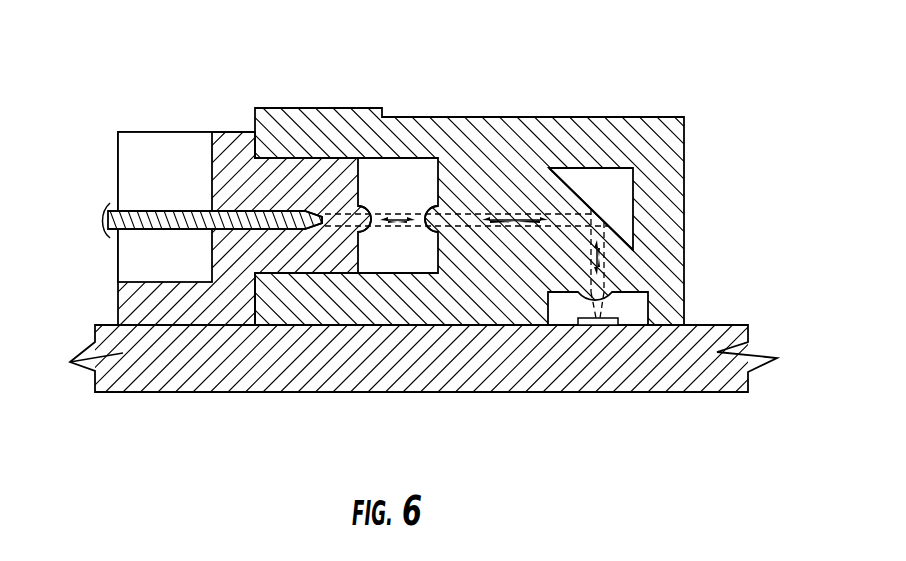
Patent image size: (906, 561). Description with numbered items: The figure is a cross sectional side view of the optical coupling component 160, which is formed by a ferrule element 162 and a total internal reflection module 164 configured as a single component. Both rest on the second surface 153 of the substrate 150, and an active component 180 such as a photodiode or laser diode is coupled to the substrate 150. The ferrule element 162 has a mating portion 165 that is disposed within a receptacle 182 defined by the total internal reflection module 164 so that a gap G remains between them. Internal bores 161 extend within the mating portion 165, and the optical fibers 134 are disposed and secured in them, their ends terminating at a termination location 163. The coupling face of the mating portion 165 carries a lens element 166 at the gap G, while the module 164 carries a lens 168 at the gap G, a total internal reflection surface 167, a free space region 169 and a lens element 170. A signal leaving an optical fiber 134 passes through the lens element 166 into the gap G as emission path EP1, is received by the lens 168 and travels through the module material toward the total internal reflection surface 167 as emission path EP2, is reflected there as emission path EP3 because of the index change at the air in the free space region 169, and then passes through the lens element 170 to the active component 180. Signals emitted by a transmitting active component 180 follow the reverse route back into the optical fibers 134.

The optical fibers 134 is at (140, 210).
The substrate 150 is at (716, 405).
The second surface 153 is at (706, 323).
The optical coupling component 160 is at (316, 86).
The internal bores 161 is at (253, 208).
The ferrule element 162 is at (219, 103).
The termination location 163 is at (331, 212).
The total internal reflection module 164 is at (560, 96).
The mating portion 165 is at (297, 262).
The lens element 166 is at (360, 233).
The total internal reflection surface 167 is at (553, 183).
The lens 168 is at (428, 233).
The free space region 169 is at (598, 182).
The lens element 170 is at (573, 298).
The active component 180 is at (618, 321).
The receptacle 182 is at (391, 277).
The gap G is at (421, 170).
The emission path EP1 is at (395, 212).
The emission path EP2 is at (495, 217).
The emission path EP3 is at (602, 262).